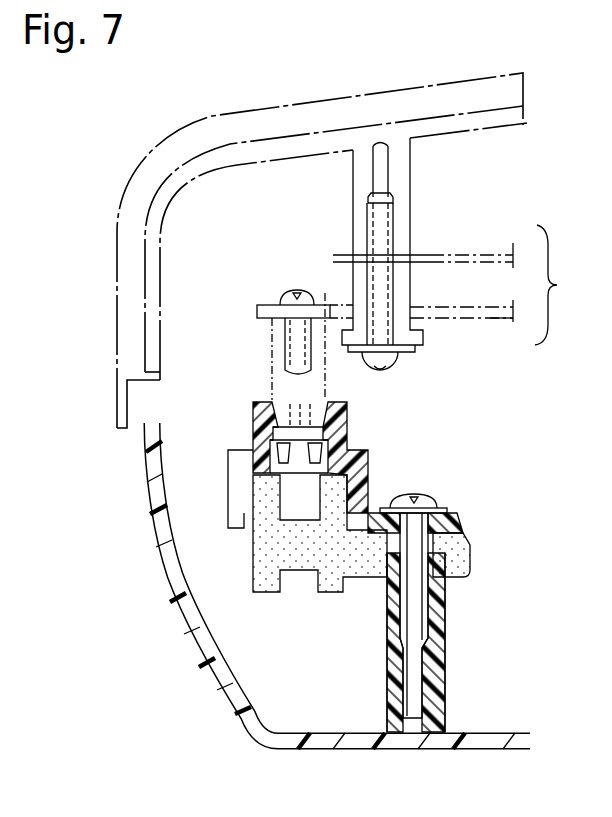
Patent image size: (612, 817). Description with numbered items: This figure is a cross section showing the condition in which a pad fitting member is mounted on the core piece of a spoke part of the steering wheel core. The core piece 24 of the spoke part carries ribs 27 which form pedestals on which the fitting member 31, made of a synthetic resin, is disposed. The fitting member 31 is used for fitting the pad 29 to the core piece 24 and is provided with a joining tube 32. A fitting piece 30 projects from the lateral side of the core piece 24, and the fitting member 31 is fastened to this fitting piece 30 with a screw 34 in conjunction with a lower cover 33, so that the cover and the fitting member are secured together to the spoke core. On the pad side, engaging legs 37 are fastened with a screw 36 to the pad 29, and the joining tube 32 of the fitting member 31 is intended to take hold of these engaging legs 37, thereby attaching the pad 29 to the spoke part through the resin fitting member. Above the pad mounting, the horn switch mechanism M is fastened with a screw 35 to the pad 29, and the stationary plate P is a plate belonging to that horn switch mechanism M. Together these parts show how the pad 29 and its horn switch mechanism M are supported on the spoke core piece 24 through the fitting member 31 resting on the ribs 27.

The core piece 24 is at (263, 560).
The rib 27 is at (250, 490).
The pad 29 is at (356, 105).
The fitting piece 30 is at (463, 537).
The fitting member 31 is at (370, 480).
The joining tube 32 is at (253, 414).
The lower cover 33 is at (430, 720).
The screw 34 is at (432, 503).
The screw 35 is at (390, 363).
The screw 36 is at (285, 297).
The engaging leg 37 is at (280, 390).
The horn switch mechanism M is at (566, 285).
The stationary plate P is at (490, 318).